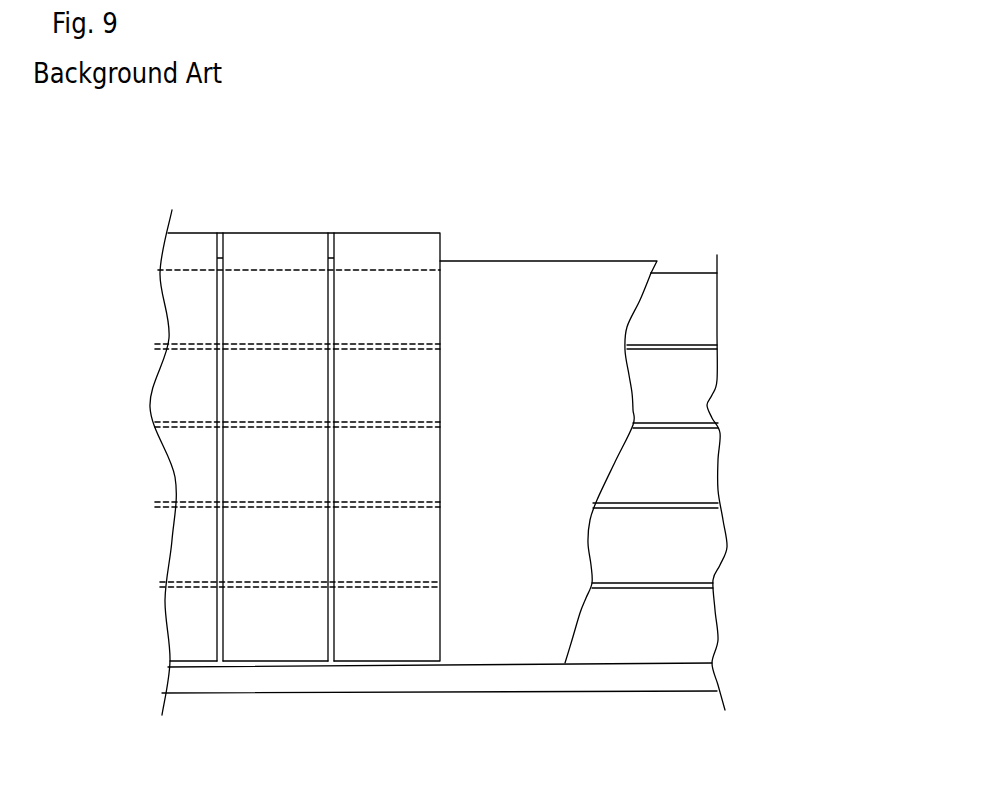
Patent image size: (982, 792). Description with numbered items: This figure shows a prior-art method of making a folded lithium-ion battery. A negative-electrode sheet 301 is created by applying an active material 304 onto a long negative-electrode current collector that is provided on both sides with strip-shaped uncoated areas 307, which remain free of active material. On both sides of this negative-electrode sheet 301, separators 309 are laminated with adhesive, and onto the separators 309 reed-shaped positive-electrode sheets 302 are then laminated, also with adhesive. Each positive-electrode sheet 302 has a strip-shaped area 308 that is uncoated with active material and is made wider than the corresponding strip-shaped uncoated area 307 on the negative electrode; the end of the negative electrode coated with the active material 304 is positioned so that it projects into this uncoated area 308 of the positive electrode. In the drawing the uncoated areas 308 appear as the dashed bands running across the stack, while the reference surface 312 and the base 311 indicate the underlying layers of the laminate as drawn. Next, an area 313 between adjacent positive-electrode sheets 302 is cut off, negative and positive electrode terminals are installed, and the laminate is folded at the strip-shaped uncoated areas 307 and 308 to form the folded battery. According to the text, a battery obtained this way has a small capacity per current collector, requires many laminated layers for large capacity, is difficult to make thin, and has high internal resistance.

The negative-electrode sheet 301 is at (688, 264).
The positive-electrode sheets 302 is at (382, 233).
The active material 304 is at (700, 298).
The strip-shaped uncoated areas 307 is at (707, 347).
The strip-shaped area uncoated with the active material 308 is at (169, 345).
The separators 309 is at (585, 282).
The base 311 is at (700, 683).
The surface 312 is at (427, 248).
The area between the adjacent positive-electrode sheets 313 is at (219, 233).